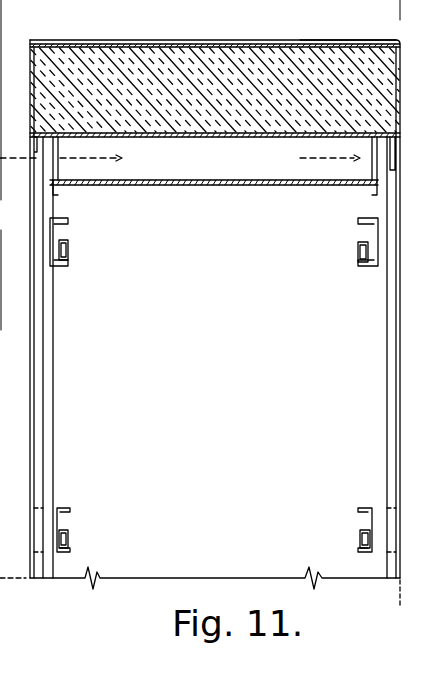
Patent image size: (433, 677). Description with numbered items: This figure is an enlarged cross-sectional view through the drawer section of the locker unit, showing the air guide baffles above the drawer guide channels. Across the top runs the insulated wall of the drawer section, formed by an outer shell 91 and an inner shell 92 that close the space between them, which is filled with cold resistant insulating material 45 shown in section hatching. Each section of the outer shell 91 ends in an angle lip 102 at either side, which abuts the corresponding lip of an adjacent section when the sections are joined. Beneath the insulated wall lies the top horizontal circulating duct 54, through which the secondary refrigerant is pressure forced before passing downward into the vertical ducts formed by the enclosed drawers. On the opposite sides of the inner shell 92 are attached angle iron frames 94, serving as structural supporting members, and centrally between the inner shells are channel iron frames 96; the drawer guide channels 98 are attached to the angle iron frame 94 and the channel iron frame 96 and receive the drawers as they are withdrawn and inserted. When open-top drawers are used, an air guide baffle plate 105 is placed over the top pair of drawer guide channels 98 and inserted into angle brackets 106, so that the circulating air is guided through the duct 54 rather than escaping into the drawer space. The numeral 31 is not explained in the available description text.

The wall section 31 is at (181, 58).
The cold resistant insulating material 45 is at (328, 29).
The top horizontal circulating duct 54 is at (207, 170).
The outer shell 91 is at (124, 45).
The inner shell 92 is at (290, 139).
The angle iron frames 94 is at (53, 466).
The channel iron frames 96 is at (42, 452).
The drawer guide channels 98 is at (60, 240).
The angle lip 102 is at (40, 38).
The air guide baffle plates 105 is at (226, 181).
The angle brackets 106 is at (54, 217).